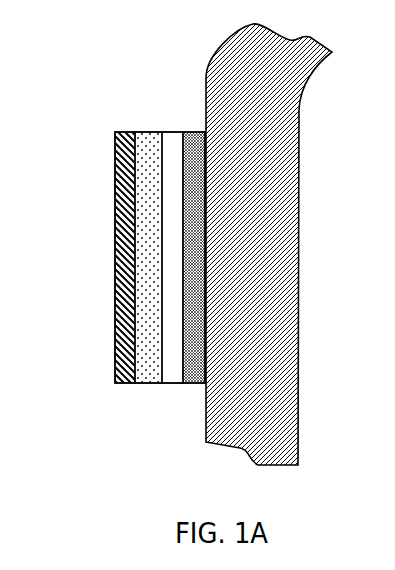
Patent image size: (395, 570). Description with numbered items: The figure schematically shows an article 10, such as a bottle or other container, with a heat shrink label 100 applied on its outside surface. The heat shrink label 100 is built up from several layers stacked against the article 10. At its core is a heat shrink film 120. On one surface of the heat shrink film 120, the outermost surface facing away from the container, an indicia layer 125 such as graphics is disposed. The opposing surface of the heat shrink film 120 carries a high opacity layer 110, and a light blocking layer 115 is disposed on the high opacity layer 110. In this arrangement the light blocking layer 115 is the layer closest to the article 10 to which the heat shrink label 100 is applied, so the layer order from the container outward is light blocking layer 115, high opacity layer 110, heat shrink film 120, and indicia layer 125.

The article 10 is at (225, 46).
The heat shrink label 100 is at (115, 269).
The high opacity layer 110 is at (168, 131).
The light blocking layer 115 is at (190, 130).
The heat shrink film 120 is at (147, 130).
The indicia layer 125 is at (115, 175).